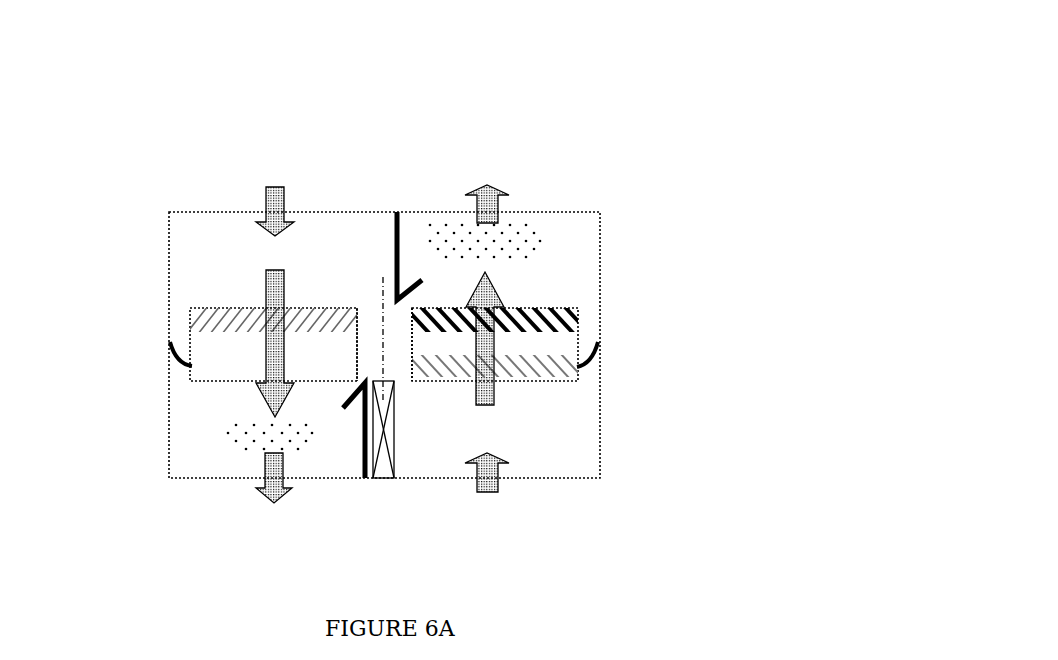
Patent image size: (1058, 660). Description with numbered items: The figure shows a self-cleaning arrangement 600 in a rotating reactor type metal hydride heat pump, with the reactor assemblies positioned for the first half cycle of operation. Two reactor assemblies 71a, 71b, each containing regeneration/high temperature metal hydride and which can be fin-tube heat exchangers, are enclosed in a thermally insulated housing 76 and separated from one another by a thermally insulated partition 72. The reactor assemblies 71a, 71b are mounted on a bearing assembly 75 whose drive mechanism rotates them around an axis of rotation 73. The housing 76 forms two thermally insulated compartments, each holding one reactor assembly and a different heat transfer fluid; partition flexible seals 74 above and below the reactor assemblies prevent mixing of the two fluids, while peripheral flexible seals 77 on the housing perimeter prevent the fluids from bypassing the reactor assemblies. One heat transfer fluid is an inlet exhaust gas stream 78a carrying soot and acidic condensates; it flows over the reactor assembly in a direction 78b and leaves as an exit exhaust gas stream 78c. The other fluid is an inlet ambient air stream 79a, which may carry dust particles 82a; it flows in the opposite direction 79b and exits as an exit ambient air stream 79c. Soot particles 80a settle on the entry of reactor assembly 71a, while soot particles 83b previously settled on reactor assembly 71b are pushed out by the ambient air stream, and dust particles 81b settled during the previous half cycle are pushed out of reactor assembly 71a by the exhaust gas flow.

The self-cleaning arrangement 600 is at (710, 88).
The thermally insulated housing 76 is at (600, 455).
The reactor assembly 71a is at (217, 357).
The reactor assembly 71b is at (577, 320).
The thermally insulated partition 72 is at (368, 317).
The axis of rotation 73 is at (380, 280).
The partition flexible seals 74 is at (403, 277).
The bearing assembly 75 is at (395, 462).
The peripheral flexible seals 77 is at (180, 360).
The inlet exhaust gas stream 78a is at (262, 210).
The exhaust gas flow direction 78b is at (263, 315).
The exit exhaust gas stream 78c is at (260, 483).
The inlet ambient air stream 79a is at (498, 490).
The ambient air flow direction 79b is at (477, 368).
The exit ambient air stream 79c is at (490, 188).
The soot particles 80a is at (222, 318).
The dust particles 81b is at (237, 443).
The dust particles 82a is at (530, 372).
The soot particles 83b is at (512, 243).